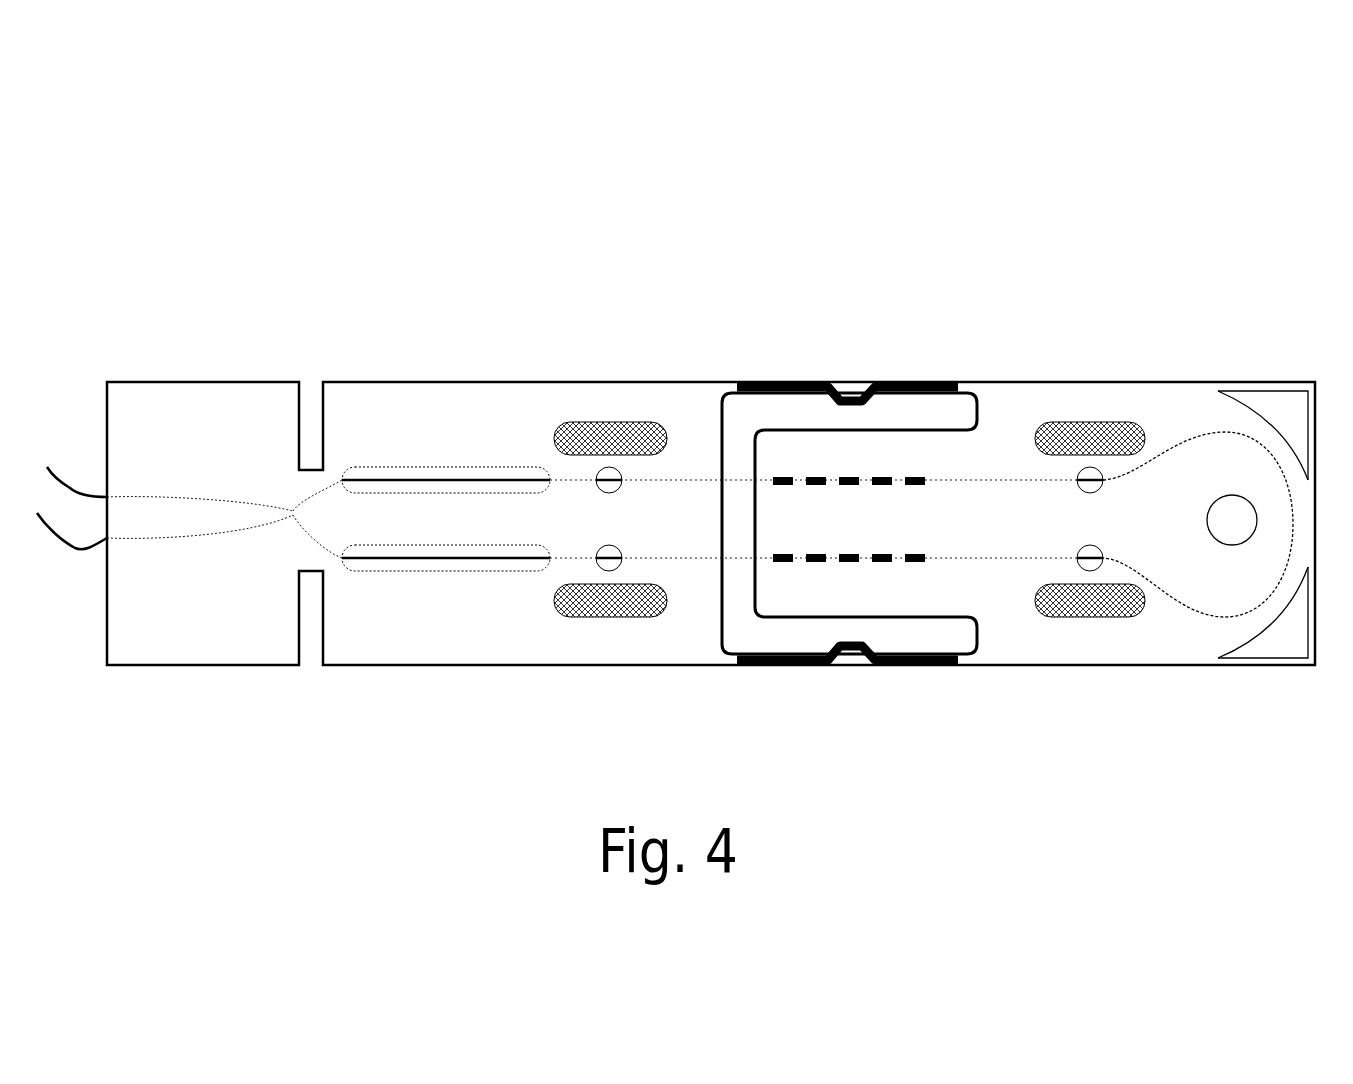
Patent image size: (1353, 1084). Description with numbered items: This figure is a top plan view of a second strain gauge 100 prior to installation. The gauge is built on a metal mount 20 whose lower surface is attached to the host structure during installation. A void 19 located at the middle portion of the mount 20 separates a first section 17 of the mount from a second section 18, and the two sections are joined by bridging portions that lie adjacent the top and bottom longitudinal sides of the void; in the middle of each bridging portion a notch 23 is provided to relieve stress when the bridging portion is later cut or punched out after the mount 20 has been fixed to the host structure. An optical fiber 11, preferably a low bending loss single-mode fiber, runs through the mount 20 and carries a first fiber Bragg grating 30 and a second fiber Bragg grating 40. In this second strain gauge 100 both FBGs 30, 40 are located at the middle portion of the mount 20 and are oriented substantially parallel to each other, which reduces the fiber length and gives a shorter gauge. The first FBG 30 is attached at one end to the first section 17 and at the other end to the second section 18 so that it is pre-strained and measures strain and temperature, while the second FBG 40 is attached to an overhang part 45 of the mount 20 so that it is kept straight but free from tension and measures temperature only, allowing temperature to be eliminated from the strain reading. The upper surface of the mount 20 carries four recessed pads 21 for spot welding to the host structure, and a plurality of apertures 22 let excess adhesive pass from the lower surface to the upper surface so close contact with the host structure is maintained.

The second strain gauge 100 is at (1136, 233).
The optical fiber 11 is at (738, 560).
The first section 17 is at (446, 519).
The second section 18 is at (1205, 524).
The void 19 is at (748, 415).
The mount 20 is at (418, 382).
The recessed pads 21 is at (598, 422).
The apertures 22 is at (615, 467).
The notch 23 is at (846, 382).
The first fiber Bragg grating 30 is at (880, 478).
The second fiber Bragg grating 40 is at (905, 575).
The overhang part 45 is at (950, 460).